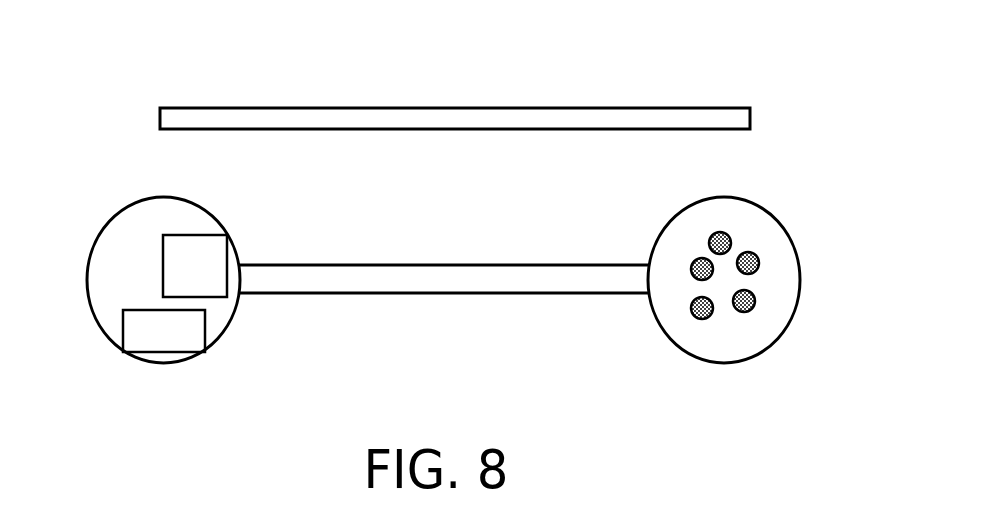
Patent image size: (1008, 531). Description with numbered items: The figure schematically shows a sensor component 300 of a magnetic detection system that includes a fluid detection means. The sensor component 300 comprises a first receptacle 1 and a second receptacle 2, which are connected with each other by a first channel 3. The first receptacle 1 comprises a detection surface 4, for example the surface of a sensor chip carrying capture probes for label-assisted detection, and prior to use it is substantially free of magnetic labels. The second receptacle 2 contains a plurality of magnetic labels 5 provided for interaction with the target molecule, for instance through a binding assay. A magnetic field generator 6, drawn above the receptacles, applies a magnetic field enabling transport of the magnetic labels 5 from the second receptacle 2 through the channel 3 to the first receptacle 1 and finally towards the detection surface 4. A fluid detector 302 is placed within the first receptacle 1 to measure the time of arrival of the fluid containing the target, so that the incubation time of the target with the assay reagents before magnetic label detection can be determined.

The sensor component 300 is at (748, 65).
The first receptacle 1 is at (87, 282).
The second receptacle 2 is at (800, 282).
The first channel 3 is at (444, 266).
The detection surface 4 is at (203, 279).
The magnetic label 5 is at (746, 308).
The magnetic field generator 6 is at (503, 130).
The fluid detector 302 is at (185, 346).